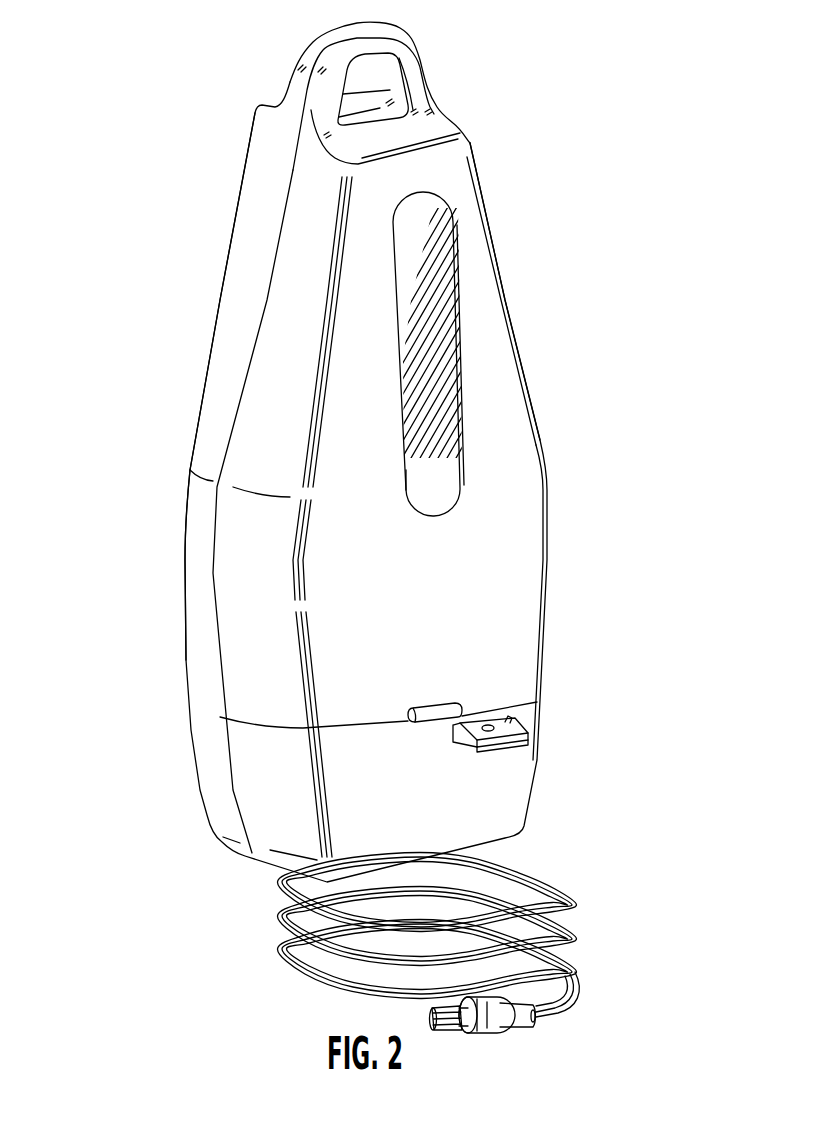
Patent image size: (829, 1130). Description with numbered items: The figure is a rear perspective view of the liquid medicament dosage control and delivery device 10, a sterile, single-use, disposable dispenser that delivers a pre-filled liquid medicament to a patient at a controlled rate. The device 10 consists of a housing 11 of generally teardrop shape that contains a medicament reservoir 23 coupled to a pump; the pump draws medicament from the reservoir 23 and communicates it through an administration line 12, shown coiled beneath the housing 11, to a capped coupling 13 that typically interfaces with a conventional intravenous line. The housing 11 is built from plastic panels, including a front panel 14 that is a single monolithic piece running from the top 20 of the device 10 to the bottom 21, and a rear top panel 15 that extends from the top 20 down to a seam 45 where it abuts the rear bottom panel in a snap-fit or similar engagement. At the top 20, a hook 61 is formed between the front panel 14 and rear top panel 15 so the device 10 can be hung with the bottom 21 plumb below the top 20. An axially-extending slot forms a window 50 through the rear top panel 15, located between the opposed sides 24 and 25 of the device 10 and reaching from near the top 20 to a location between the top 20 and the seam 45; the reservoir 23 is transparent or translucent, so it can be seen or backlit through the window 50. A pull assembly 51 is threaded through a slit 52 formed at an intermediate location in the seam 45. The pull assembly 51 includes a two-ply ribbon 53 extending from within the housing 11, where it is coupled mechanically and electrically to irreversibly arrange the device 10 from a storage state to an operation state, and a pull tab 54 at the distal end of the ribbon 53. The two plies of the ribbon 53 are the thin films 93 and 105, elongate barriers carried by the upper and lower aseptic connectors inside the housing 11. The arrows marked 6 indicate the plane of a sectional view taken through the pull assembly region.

The liquid medicament dosage control and delivery device 10 is at (688, 172).
The housing 11 is at (506, 264).
The administration line 12 is at (574, 914).
The capped coupling 13 is at (486, 1036).
The front panel 14 is at (184, 536).
The rear top panel 15 is at (540, 441).
The top 20 is at (424, 45).
The bottom 21 is at (233, 857).
The medicament reservoir 23 is at (430, 352).
The side 24 is at (549, 565).
The side 25 is at (212, 572).
The seam 45 is at (540, 691).
The window 50 is at (432, 458).
The pull assembly 51 is at (498, 679).
The slit 52 is at (465, 710).
The two-ply ribbon 53 is at (445, 684).
The pull tab 54 is at (522, 738).
The hook 61 is at (390, 100).
The thin film 93 is at (463, 730).
The thin film 105 is at (450, 740).
The section line 6- 6 is at (563, 653).